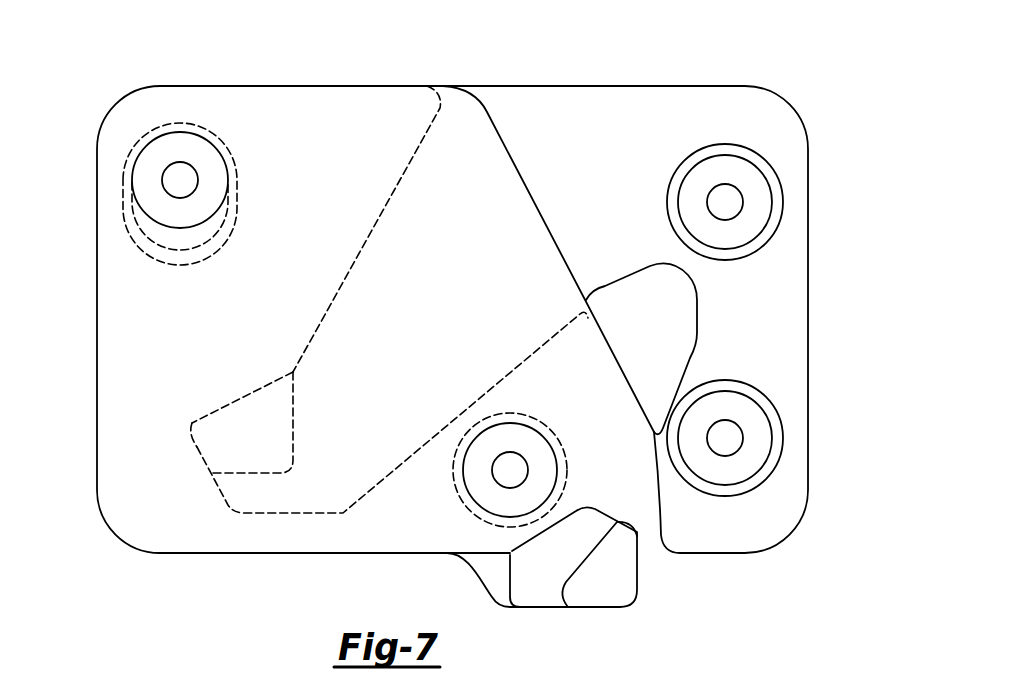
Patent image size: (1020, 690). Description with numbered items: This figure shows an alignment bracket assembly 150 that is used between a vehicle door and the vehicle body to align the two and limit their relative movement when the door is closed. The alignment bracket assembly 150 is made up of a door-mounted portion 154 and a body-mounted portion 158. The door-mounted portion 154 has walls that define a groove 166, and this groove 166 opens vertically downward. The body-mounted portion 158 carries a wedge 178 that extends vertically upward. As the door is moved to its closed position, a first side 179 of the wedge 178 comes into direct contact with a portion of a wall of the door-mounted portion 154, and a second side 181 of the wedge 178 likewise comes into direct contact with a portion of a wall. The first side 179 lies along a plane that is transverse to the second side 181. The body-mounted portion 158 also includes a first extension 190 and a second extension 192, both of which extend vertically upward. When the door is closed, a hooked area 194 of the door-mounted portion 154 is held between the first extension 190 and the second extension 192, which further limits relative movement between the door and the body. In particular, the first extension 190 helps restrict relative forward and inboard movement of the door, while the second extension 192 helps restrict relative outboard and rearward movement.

The alignment bracket assembly 150 is at (464, 337).
The body-mounted portion 158 is at (752, 290).
The groove 166 is at (562, 216).
The first extension 190 is at (668, 345).
The door-mounted portion 154 is at (613, 450).
The second extension 192 is at (607, 568).
The hooked area 194 is at (636, 502).
The wedge 178 is at (242, 442).
The first side 179 is at (240, 397).
The second side 181 is at (195, 446).